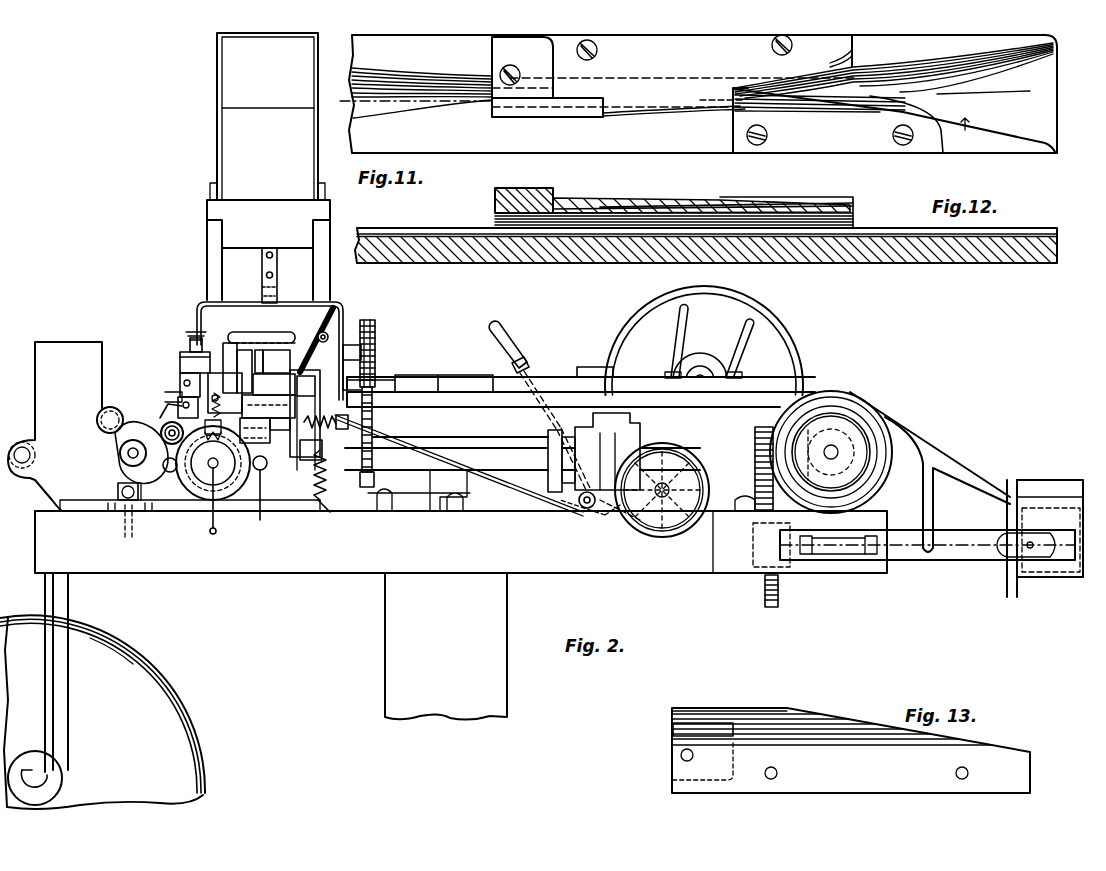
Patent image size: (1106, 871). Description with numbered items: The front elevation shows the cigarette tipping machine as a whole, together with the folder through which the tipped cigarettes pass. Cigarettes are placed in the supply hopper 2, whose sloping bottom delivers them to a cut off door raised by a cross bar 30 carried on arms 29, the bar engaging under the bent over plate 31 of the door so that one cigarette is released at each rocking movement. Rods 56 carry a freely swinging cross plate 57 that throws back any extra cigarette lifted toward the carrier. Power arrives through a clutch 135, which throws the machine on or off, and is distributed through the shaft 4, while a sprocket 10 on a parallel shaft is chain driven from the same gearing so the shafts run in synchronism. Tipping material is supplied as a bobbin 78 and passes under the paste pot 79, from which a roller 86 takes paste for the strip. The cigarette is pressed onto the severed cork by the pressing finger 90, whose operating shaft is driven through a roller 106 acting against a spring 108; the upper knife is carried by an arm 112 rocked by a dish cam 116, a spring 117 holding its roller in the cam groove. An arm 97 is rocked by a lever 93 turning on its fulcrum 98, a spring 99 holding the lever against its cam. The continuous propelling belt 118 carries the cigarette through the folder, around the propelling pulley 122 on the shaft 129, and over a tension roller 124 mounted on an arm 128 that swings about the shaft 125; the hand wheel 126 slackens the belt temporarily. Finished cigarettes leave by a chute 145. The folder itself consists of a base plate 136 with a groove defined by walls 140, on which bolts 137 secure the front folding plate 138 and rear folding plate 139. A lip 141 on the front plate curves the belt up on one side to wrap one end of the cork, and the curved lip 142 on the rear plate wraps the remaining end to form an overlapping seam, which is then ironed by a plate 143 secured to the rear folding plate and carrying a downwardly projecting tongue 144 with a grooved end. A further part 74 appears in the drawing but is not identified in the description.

In FIG. 2, the supply hopper 2 is at (258, 166).
In FIG. 2, the cross bar 30 is at (295, 300).
In FIG. 2, the bent over plate 31 is at (298, 330).
In FIG. 2, the pressing finger 90 is at (248, 332).
In FIG. 2, the cross plate 57 is at (228, 333).
In FIG. 2, the arm 97 is at (295, 350).
In FIG. 2, the roller 106 is at (242, 410).
In FIG. 2, the lever 93 is at (318, 385).
In FIG. 2, the link 74 is at (338, 308).
In FIG. 2, the arms 29 is at (347, 318).
In FIG. 2, the sprocket 10 is at (377, 330).
In FIG. 2, the rods 56 is at (378, 345).
In FIG. 2, the spring 108 is at (350, 420).
In FIG. 2, the spring 99 is at (330, 513).
In FIG. 2, the paste pot 79 is at (92, 384).
In FIG. 2, the shaft 4 is at (480, 448).
In FIG. 2, the bobbin 78 is at (162, 700).
In FIG. 2, the roller 86 is at (146, 415).
In FIG. 2, the arm 112 is at (183, 405).
In FIG. 2, the dish cam 116 is at (180, 470).
In FIG. 2, the spring 117 is at (205, 500).
In FIG. 2, the fulcrum 98 is at (268, 522).
In FIG. 2, the belt 118 is at (506, 478).
In FIG. 2, the clutch 135 is at (548, 440).
In FIG. 2, the shaft 125 is at (625, 462).
In FIG. 2, the tension roller 124 is at (618, 522).
In FIG. 2, the hand wheel 126 is at (670, 520).
In FIG. 2, the propelling pulley 122 is at (782, 420).
In FIG. 2, the shaft 129 is at (838, 458).
In FIG. 2, the arm 128 is at (753, 540).
In FIG. 2, the chute 145 is at (968, 478).
In FIG. 11, the base plate 136 is at (1040, 66).
In FIG. 12, the base plate 136 is at (873, 263).
In FIG. 11, the bolts 137 is at (765, 45).
In FIG. 11, the front folding plate 138 is at (850, 142).
In FIG. 11, the rear folding plate 139 is at (845, 50).
In FIG. 12, the rear folding plate 139 is at (855, 202).
In FIG. 13, the rear folding plate 139 is at (851, 750).
In FIG. 11, the walls 140 is at (981, 128).
In FIG. 11, the lip 141 is at (722, 104).
In FIG. 11, the curved lip 142 is at (660, 98).
In FIG. 12, the curved lip 142 is at (650, 198).
In FIG. 13, the curved lip 142 is at (826, 742).
In FIG. 11, the plate 143 is at (497, 62).
In FIG. 12, the plate 143 is at (555, 192).
In FIG. 13, the tongue 144 is at (670, 737).